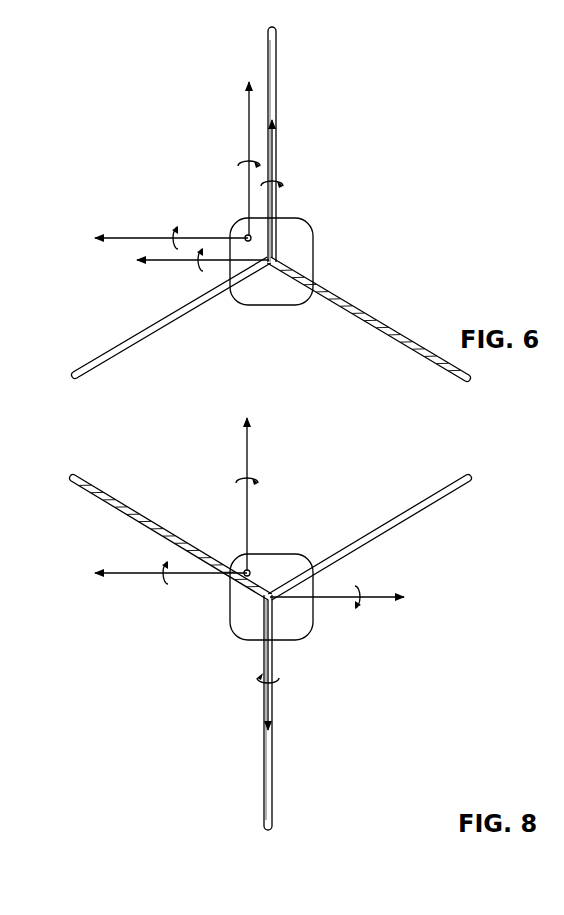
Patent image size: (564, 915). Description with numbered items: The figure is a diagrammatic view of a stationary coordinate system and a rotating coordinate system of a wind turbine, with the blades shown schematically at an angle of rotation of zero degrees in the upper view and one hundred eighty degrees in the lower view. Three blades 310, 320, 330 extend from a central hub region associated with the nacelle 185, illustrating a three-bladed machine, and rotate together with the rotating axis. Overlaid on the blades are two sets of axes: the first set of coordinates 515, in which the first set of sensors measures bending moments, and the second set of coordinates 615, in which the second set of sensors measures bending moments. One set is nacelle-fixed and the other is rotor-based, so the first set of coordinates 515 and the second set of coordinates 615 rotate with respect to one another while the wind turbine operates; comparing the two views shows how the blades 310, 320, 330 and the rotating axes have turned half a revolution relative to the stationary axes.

In FIG. 6, the nacelle 185 is at (302, 222).
In FIG. 8, the nacelle 185 is at (302, 555).
In FIG. 6, the blade 310 is at (278, 50).
In FIG. 8, the blade 310 is at (263, 750).
In FIG. 6, the blade 320 is at (384, 322).
In FIG. 8, the blade 320 is at (133, 508).
In FIG. 6, the third blade 330 is at (166, 330).
In FIG. 8, the third blade 330 is at (413, 505).
In FIG. 6, the first set of coordinates 515 is at (148, 236).
In FIG. 8, the first set of coordinates 515 is at (245, 515).
In FIG. 6, the second set of coordinates 615 is at (185, 262).
In FIG. 8, the second set of coordinates 615 is at (381, 600).